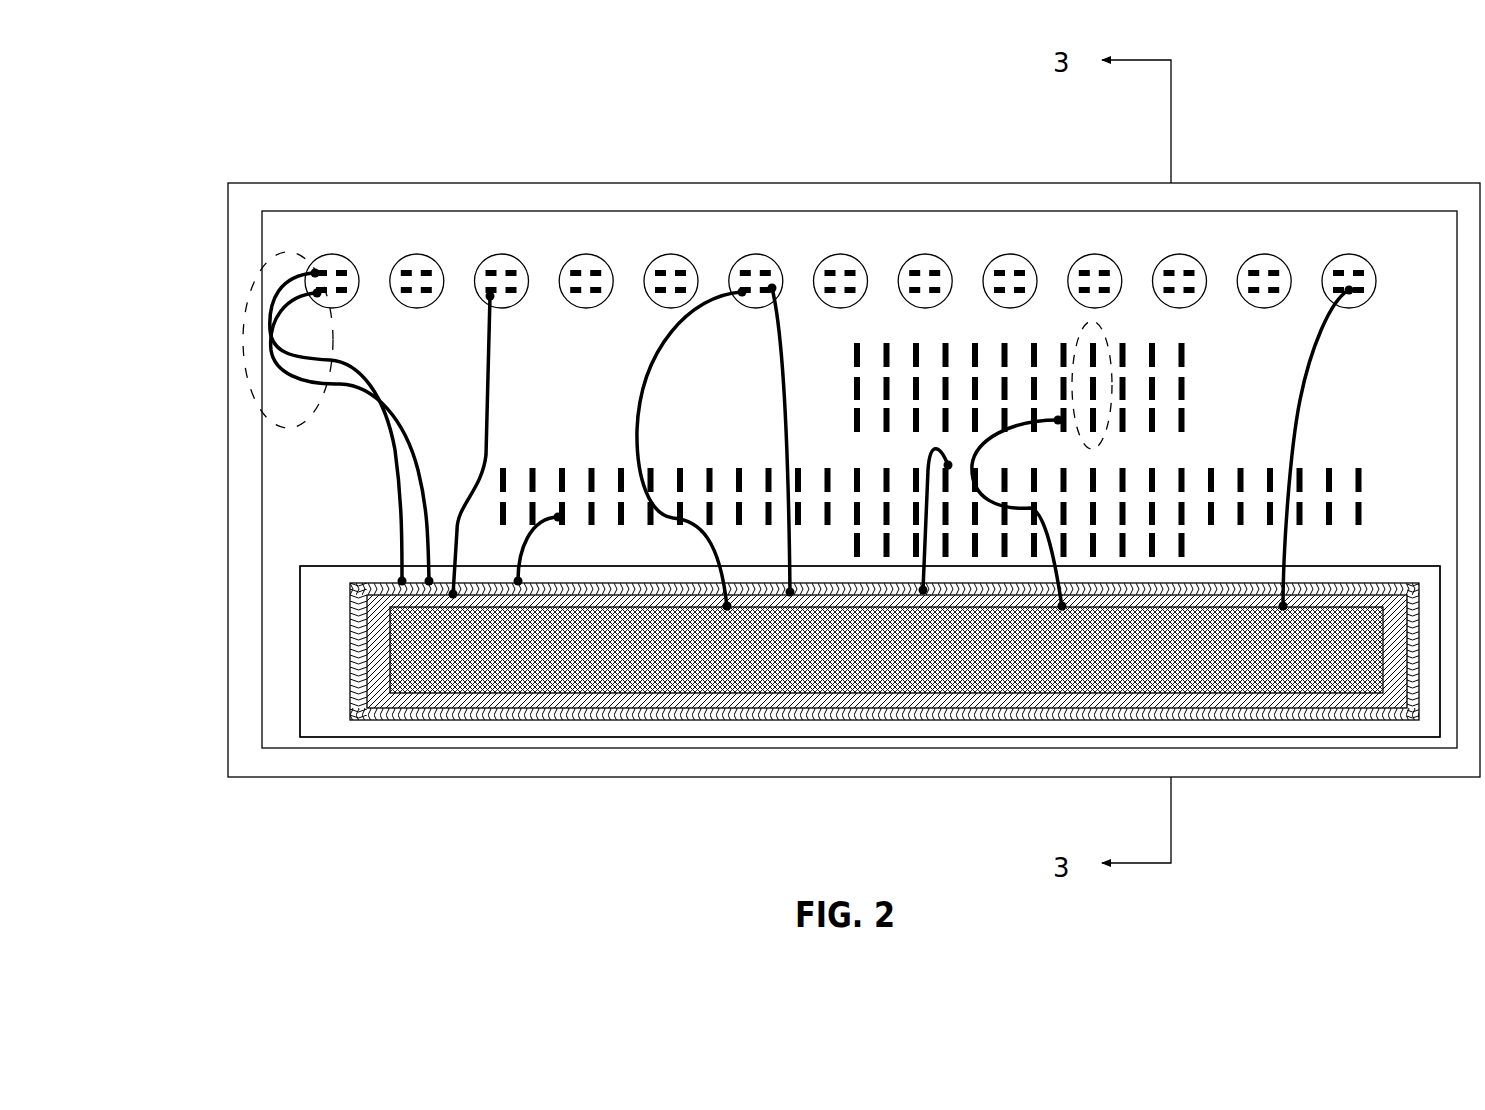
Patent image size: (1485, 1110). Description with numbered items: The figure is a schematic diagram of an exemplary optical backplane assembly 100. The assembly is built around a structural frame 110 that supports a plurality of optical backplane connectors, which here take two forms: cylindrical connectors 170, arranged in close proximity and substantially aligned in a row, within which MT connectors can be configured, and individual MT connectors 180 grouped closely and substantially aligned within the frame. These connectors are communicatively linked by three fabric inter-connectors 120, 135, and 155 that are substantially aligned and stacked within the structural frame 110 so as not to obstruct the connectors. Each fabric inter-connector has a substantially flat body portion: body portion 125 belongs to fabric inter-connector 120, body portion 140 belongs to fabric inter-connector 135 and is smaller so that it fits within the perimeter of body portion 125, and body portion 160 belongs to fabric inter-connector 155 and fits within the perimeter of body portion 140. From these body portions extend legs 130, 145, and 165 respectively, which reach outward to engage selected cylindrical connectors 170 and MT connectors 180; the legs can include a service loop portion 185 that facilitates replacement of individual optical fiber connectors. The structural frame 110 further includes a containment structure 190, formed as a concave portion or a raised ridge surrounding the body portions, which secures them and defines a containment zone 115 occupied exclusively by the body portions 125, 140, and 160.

The optical backplane assembly 100 is at (273, 85).
The structural frame 110 is at (540, 183).
The containment zone 115 is at (328, 618).
The fabric inter-connector 120 is at (345, 652).
The body portion 125 is at (363, 720).
The legs 130 is at (530, 533).
The fabric inter-connector 135 is at (842, 713).
The body portion 140 is at (930, 705).
The legs 145 is at (922, 525).
The fabric inter-connector 155 is at (1220, 697).
The body portion 160 is at (1300, 673).
The legs 165 is at (1043, 523).
The cylindrical connectors 170 is at (1349, 254).
The MT connectors 180 is at (1090, 322).
The service loop portion 185 is at (246, 380).
The containment structure 190 is at (298, 652).